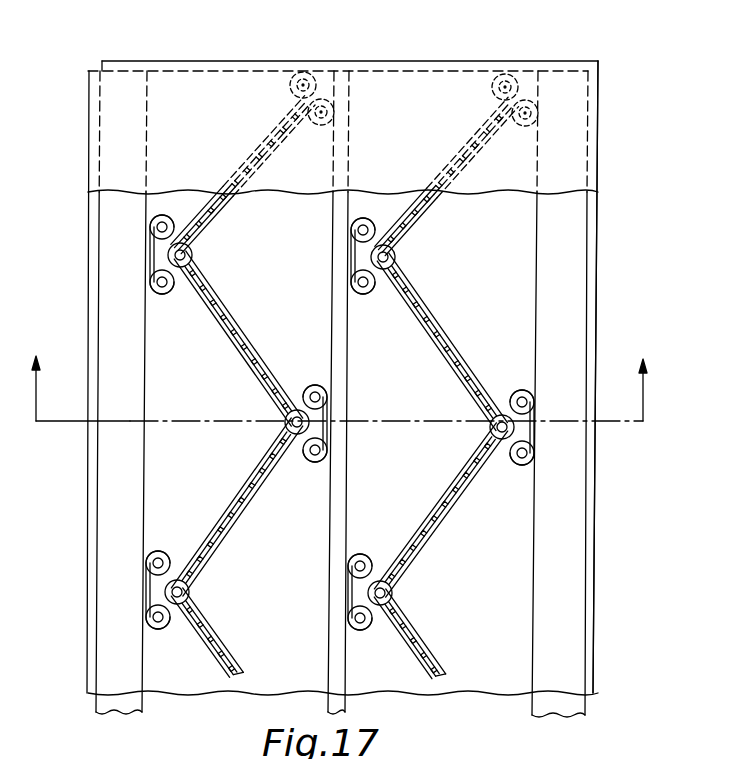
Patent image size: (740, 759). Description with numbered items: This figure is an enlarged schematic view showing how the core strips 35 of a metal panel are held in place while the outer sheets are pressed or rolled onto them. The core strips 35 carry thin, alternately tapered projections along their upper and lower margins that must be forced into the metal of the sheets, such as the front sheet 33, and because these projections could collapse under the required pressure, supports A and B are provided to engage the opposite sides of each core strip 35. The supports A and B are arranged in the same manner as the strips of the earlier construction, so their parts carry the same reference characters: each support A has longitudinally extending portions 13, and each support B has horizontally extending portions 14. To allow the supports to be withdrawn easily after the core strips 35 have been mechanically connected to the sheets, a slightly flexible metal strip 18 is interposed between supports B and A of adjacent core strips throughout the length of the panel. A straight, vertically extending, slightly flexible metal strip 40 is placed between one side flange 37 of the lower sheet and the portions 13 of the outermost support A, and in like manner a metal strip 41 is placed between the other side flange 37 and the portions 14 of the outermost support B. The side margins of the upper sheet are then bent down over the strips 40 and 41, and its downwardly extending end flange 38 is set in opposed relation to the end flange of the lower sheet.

The longitudinally extending portions 13 is at (151, 270).
The horizontally extending portions 14 is at (328, 415).
The metal strip 18 is at (361, 353).
The front sheet 33 is at (578, 128).
The core strips 35 is at (461, 360).
The side flanges 37 is at (85, 565).
The end flange 38 is at (408, 62).
The metal strip 40 is at (108, 245).
The metal strip 41 is at (577, 228).
The support A is at (340, 375).
The support B is at (235, 527).